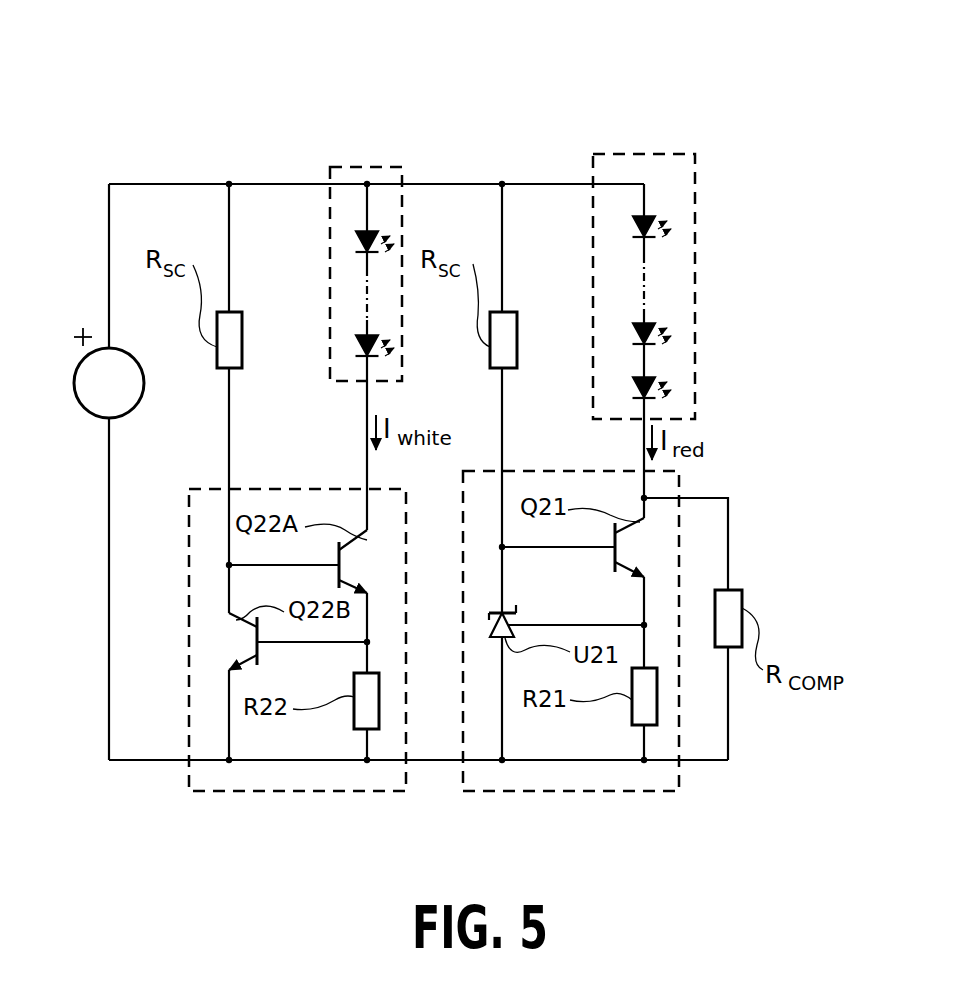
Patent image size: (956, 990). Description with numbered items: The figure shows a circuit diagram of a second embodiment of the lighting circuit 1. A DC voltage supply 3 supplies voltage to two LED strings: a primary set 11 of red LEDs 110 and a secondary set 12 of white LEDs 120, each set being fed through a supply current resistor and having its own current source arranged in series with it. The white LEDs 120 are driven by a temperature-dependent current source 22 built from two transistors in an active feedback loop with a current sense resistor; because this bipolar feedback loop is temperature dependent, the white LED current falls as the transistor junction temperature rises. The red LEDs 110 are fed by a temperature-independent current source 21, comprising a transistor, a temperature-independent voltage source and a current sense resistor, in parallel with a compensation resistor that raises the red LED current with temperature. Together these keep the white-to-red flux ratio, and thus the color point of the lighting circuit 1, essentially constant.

The lighting circuit 1 is at (722, 108).
The DC voltage supply 3 is at (84, 410).
The primary set of red LEDs 11 is at (651, 286).
The secondary set of white LEDs 12 is at (318, 237).
The red LED 110 is at (643, 226).
The white LED 120 is at (357, 233).
The temperature-independent current source 21 is at (588, 793).
The temperature-dependent current source 22 is at (342, 793).